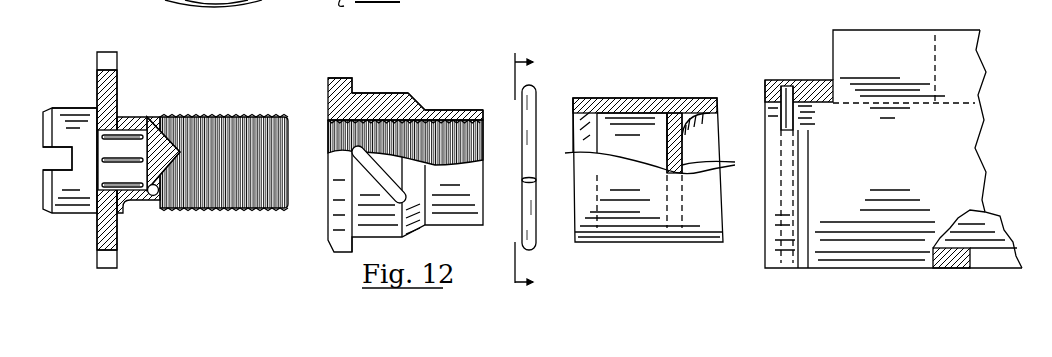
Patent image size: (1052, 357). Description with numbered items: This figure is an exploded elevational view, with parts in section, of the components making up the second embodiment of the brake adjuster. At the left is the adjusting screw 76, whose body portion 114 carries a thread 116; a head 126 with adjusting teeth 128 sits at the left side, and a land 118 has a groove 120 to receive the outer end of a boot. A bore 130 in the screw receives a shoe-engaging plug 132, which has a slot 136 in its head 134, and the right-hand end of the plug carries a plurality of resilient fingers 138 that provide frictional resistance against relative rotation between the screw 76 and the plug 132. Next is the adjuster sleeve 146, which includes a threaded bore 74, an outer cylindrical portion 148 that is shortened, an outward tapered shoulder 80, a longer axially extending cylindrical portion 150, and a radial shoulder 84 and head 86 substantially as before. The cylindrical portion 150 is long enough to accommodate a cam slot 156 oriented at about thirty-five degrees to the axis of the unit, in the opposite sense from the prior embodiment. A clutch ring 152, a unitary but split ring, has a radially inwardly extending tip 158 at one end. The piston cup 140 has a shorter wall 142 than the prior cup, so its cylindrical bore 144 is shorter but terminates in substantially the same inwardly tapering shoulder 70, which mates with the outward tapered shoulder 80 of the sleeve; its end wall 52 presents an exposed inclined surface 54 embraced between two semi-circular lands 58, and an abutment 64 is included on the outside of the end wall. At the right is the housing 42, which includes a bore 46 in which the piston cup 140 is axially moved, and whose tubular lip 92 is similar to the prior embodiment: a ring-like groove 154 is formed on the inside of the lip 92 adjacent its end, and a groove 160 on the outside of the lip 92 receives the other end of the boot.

The housing 42 is at (925, 265).
The bore 46 is at (965, 237).
The end wall 52 is at (667, 145).
The inclined surface 54 is at (695, 172).
The semi-circular lands 58 is at (700, 160).
The abutment 64 is at (717, 107).
The inwardly tapering shoulder 70 is at (574, 100).
The threaded bore 74 is at (455, 110).
The adjusting screw 76 is at (247, 207).
The outward tapered shoulder 80 is at (418, 100).
The radial shoulder 84 is at (355, 85).
The head 86 is at (345, 80).
The tubular lip 92 is at (780, 266).
The body portion 114 is at (250, 137).
The thread 116 is at (258, 116).
The land 118 is at (125, 150).
The groove 120 is at (118, 128).
The head 126 is at (100, 85).
The adjusting teeth 128 is at (104, 62).
The bore 130 is at (160, 200).
The shoe-engaging plug 132 is at (63, 102).
The head 134 is at (55, 108).
The slot 136 is at (60, 166).
The resilient fingers 138 is at (122, 175).
The piston cup 140 is at (681, 243).
The wall 142 is at (640, 107).
The cylindrical bore 144 is at (635, 118).
The adjuster sleeve 146 is at (420, 228).
The outer cylindrical portion 148 is at (465, 120).
The axially extending cylindrical portion 150 is at (372, 93).
The clutch ring 152 is at (538, 238).
The ring-like groove 154 is at (785, 100).
The cam slot 156 is at (372, 186).
The radially inwardly extending tip 158 is at (533, 180).
The groove 160 is at (807, 80).